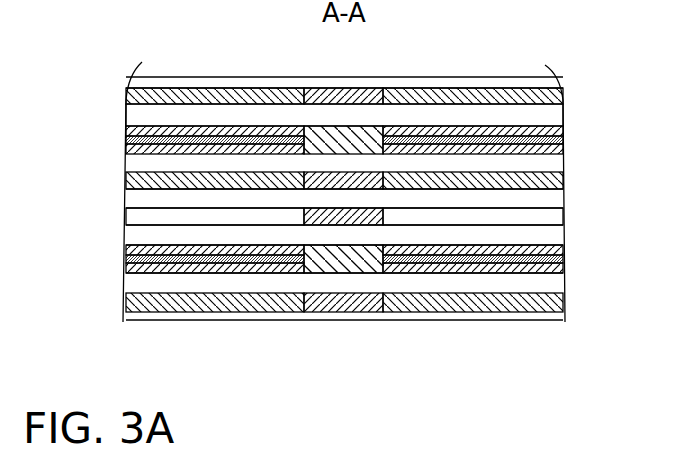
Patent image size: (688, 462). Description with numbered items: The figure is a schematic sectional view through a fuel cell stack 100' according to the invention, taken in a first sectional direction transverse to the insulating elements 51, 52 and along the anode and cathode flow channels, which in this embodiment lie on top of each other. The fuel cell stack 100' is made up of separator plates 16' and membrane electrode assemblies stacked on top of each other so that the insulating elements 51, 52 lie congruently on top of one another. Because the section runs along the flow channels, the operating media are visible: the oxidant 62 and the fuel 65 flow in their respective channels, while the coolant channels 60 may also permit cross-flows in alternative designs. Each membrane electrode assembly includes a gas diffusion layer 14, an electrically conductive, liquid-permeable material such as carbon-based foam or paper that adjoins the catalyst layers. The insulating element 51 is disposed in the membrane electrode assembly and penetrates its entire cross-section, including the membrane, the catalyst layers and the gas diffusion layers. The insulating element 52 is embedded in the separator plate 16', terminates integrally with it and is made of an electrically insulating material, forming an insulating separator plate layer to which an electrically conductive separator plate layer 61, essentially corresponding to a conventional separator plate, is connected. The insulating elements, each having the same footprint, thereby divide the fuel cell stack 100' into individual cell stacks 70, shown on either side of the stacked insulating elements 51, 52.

The fuel cell stack 100' is at (338, 161).
The insulating element 51 is at (318, 140).
The insulating element 52 is at (373, 97).
The coolant channel 60 is at (549, 83).
The electrically conductive separator plate layer 61 is at (549, 97).
The oxidant 62 is at (549, 116).
The gas diffusion layer 14 is at (549, 130).
The fuel 65 is at (549, 162).
The separator plate 16' is at (379, 295).
The cell stack 70 is at (303, 325).